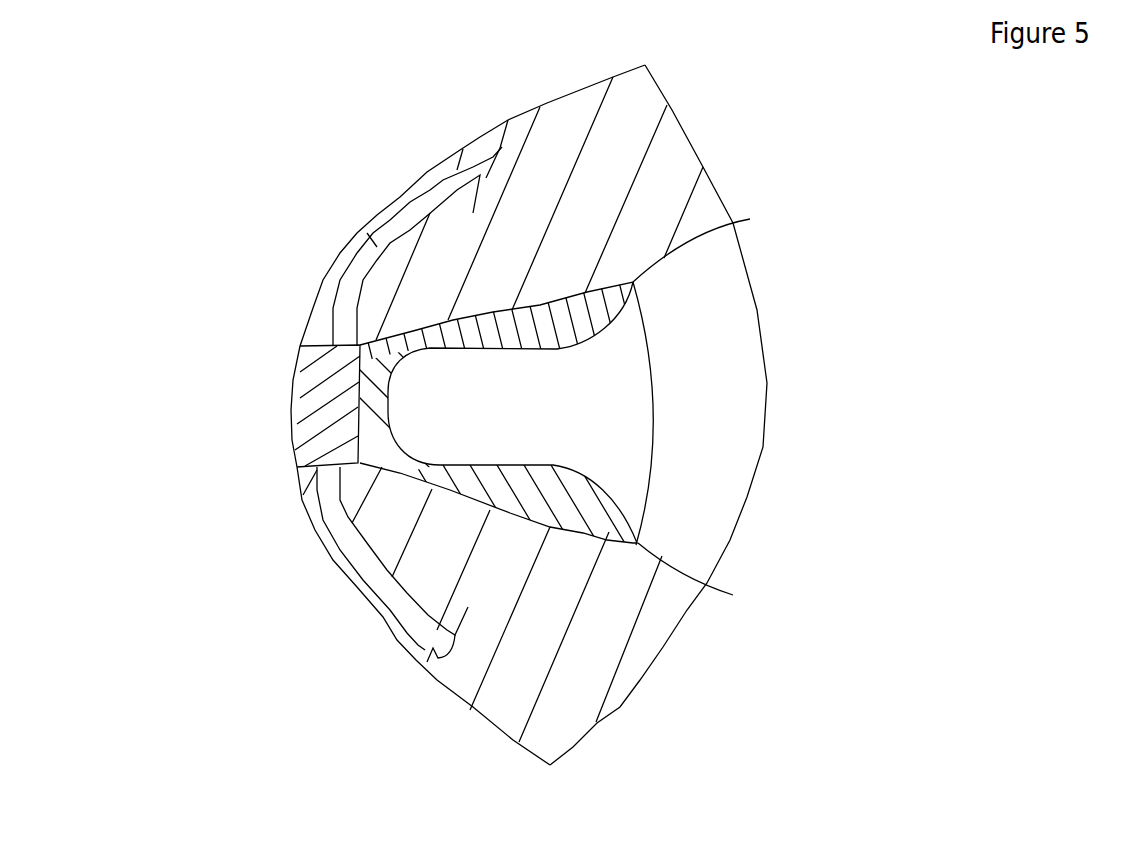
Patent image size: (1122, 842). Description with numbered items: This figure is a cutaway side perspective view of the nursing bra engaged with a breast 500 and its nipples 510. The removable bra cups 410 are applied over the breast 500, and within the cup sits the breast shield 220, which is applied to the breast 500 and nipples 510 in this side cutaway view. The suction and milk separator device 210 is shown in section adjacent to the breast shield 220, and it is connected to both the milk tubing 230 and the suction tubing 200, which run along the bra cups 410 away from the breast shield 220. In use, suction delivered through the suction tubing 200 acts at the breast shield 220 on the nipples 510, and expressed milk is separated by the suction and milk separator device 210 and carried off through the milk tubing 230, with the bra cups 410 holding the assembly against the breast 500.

The suction tubing 200 is at (358, 233).
The suction and milk separator device 210 is at (333, 407).
The breast shield 220 is at (513, 337).
The milk tubing 230 is at (368, 560).
The bra cups 410 is at (360, 602).
The breast 500 is at (707, 388).
The nipples 510 is at (475, 387).